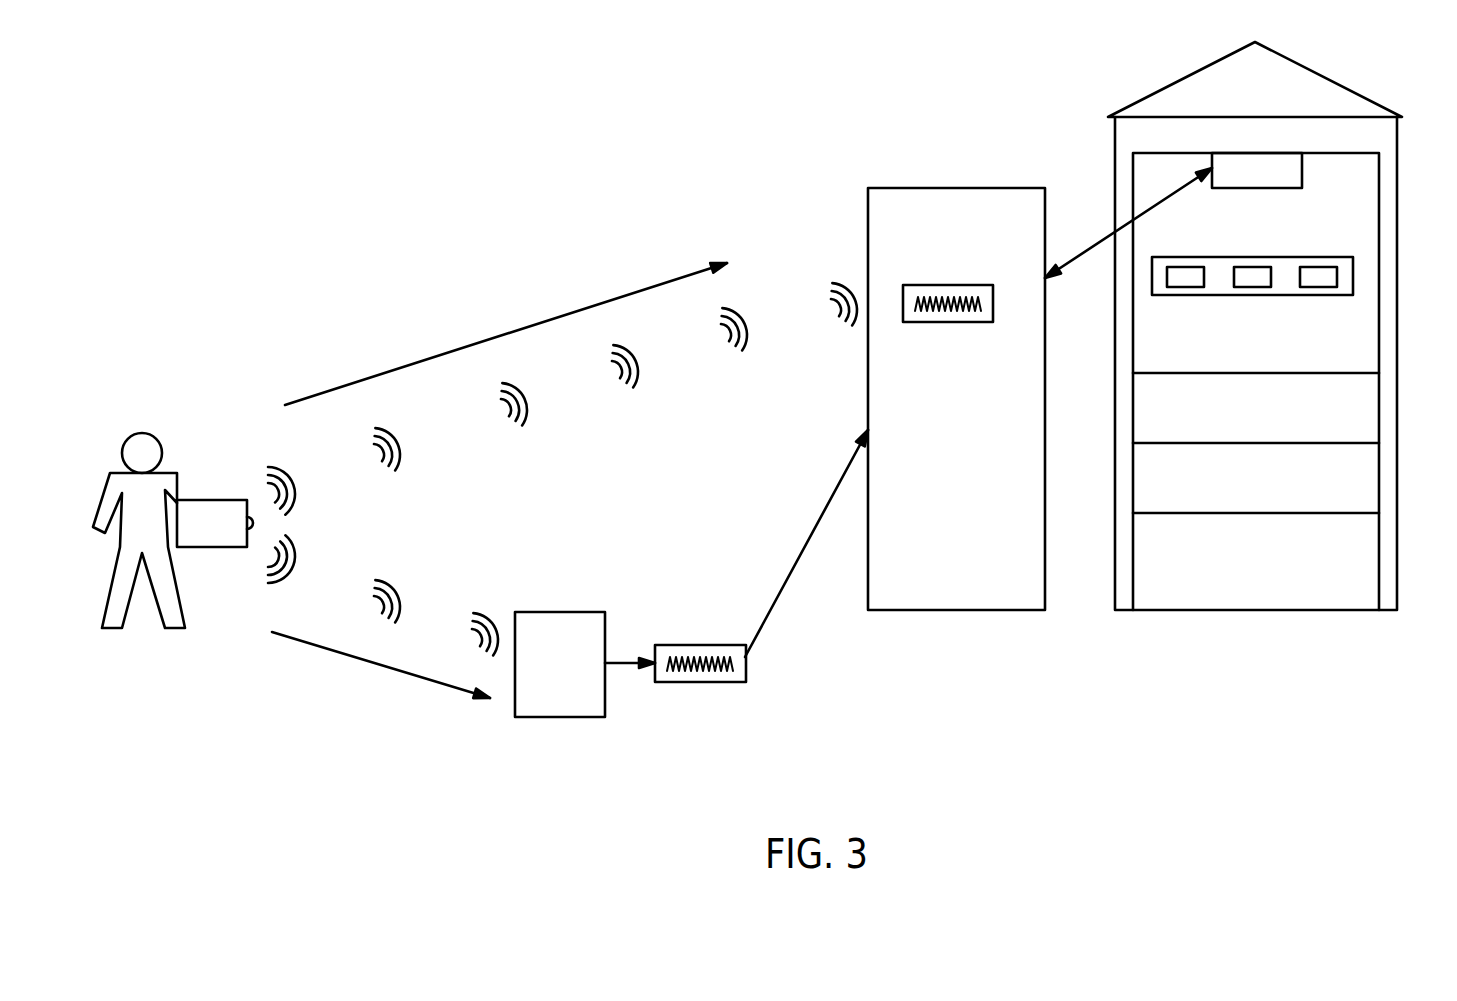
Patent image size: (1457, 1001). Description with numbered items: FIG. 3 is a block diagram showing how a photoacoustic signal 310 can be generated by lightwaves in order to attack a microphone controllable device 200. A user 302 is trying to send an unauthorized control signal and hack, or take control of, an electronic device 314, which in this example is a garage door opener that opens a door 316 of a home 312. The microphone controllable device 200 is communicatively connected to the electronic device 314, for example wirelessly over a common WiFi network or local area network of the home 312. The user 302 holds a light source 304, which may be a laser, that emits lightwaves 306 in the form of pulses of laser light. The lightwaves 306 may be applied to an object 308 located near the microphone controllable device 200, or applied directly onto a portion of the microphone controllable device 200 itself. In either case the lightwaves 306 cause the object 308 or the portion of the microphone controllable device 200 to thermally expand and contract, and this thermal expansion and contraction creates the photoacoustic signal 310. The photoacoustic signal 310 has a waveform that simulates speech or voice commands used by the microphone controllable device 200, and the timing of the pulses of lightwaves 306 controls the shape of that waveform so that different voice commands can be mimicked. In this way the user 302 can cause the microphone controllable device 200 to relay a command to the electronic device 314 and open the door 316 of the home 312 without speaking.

The microphone controllable device 200 is at (974, 222).
The user 302 is at (152, 438).
The light source 304 is at (229, 534).
The lightwaves 306 is at (287, 480).
The object 308 is at (576, 676).
The photoacoustic signal 310 is at (943, 322).
The home 312 is at (1333, 80).
The electronic device 314 is at (1271, 182).
The door 316 is at (1343, 202).